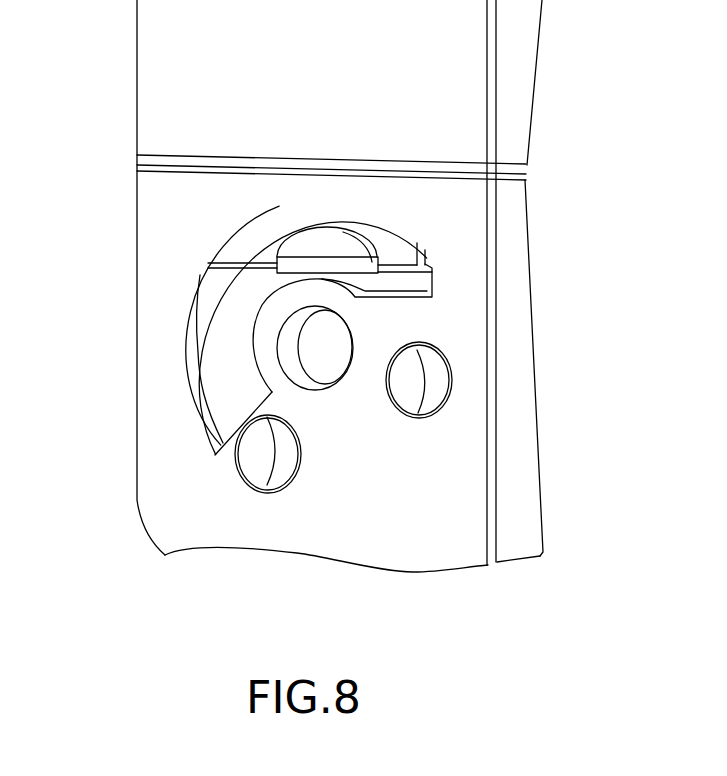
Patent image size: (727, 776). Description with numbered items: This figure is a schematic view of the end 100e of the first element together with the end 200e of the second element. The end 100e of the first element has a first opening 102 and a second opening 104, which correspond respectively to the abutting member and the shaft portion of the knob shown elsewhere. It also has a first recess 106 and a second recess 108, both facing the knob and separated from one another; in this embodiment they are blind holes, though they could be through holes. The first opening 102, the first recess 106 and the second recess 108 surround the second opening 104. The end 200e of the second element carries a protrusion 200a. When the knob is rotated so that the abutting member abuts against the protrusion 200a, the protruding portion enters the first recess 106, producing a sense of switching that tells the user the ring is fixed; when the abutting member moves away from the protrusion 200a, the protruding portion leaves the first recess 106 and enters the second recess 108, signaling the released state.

The end of the first element 100e is at (358, 546).
The first opening 102 is at (265, 320).
The second opening 104 is at (322, 350).
The first recess 106 is at (238, 472).
The second recess 108 is at (387, 397).
The protrusion 200a is at (338, 250).
The end of the second element 200e is at (252, 235).